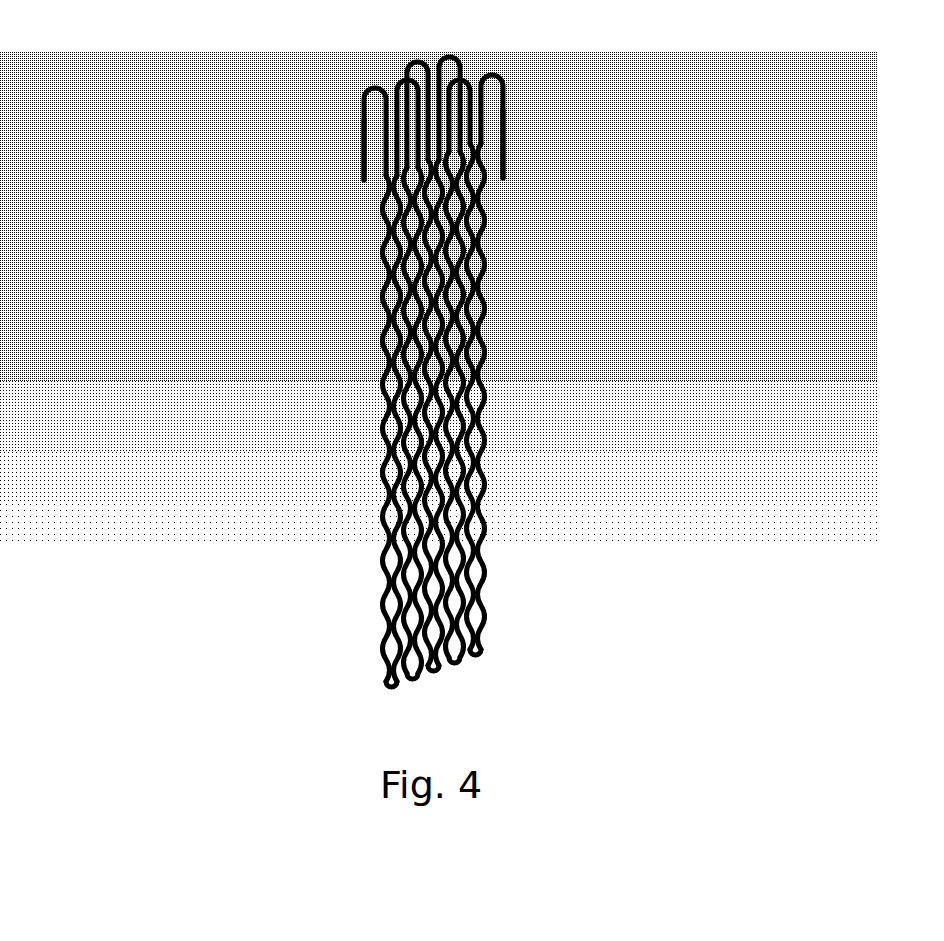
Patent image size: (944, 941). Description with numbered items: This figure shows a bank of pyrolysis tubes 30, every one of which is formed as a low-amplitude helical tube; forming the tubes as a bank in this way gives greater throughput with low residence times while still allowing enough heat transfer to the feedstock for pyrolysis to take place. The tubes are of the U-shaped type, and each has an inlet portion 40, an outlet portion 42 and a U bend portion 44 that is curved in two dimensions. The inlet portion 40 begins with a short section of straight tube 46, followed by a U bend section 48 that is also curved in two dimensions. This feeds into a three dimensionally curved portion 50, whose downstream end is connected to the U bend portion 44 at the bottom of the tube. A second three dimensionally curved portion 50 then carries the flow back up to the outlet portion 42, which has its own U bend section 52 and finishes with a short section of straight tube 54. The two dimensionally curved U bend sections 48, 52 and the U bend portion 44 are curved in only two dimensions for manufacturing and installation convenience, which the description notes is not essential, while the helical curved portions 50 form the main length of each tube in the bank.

The pyrolysis tubes 30 is at (442, 377).
The inlet portion 40 is at (349, 116).
The outlet portion 42 is at (518, 122).
The U bend portion 44 is at (478, 657).
The short section of straight tube 46 is at (356, 160).
The U bend section 48 is at (425, 60).
The three dimensionally curved portion 50 is at (383, 388).
The U bend section 52 is at (488, 78).
The short section of straight tube 54 is at (508, 158).